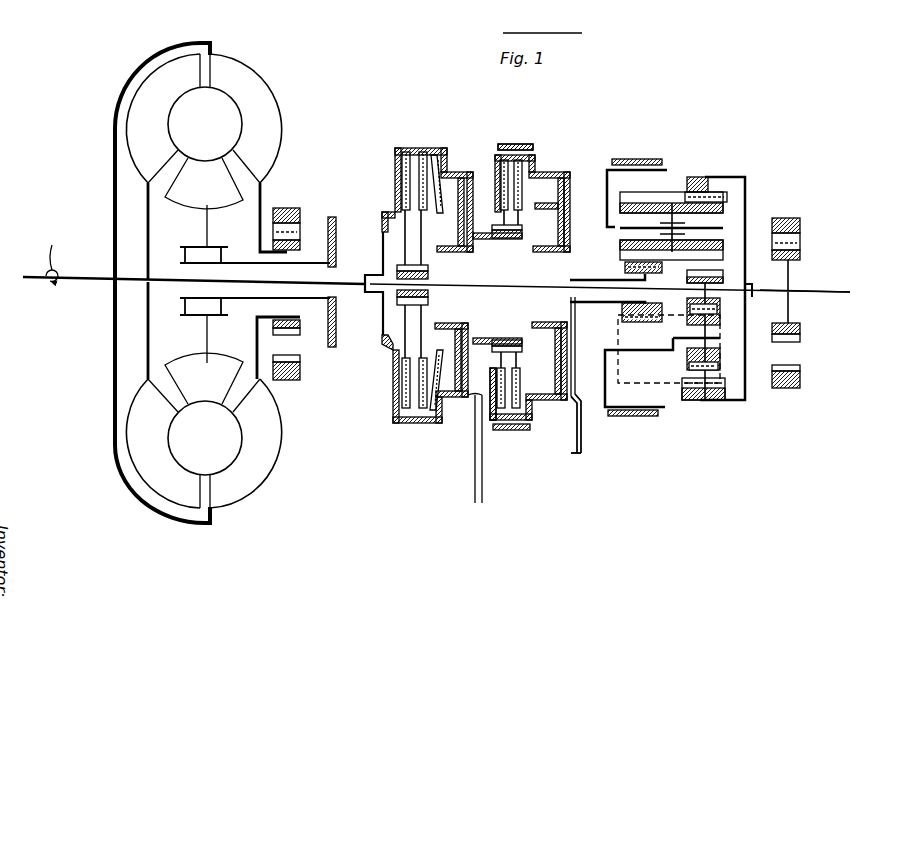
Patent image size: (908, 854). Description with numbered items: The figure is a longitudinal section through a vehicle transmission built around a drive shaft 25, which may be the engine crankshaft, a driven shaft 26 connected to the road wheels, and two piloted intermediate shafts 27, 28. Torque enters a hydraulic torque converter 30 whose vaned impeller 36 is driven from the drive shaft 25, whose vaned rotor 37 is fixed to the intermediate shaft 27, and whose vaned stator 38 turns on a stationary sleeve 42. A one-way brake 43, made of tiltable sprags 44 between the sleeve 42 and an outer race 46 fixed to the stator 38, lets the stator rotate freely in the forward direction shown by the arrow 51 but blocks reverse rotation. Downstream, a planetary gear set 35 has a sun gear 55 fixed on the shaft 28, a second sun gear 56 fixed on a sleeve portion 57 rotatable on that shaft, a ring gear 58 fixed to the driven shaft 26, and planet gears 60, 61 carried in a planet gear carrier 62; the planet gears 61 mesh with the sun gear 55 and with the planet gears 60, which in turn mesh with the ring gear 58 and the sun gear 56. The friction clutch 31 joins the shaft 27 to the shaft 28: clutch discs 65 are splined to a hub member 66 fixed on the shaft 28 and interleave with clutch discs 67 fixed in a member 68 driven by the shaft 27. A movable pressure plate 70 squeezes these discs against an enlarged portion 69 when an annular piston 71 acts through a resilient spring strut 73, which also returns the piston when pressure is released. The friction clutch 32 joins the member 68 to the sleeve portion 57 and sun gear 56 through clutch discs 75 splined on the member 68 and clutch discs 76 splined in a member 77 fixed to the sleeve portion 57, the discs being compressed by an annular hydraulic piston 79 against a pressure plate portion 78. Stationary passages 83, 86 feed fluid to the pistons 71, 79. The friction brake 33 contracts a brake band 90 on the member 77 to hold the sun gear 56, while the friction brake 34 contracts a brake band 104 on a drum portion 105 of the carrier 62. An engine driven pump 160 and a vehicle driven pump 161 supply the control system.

The drive shaft 25 is at (82, 277).
The driven shaft 26 is at (838, 292).
The intermediate shaft 27 is at (350, 283).
The intermediate shaft 28 is at (515, 285).
The hydraulic torque converter 30 is at (222, 283).
The friction clutch 31 is at (414, 188).
The friction clutch 32 is at (485, 157).
The friction brake 33 is at (521, 145).
The friction brake 34 is at (637, 158).
The planetary gear set 35 is at (720, 170).
The impeller element 36 is at (270, 129).
The rotor 37 is at (160, 122).
The stator 38 is at (217, 184).
The stationary sleeve 42 is at (317, 262).
The one-way brake 43 is at (178, 312).
The tiltable sprags 44 is at (190, 250).
The outer race 46 is at (232, 312).
The arrow 51 is at (50, 254).
The sun gear 55 is at (724, 278).
The second sun gear 56 is at (625, 270).
The sleeve portion 57 is at (598, 302).
The ring gear 58 is at (727, 198).
The planet gears 60 is at (722, 213).
The planet gears 61 is at (689, 363).
The planet gear carrier 62 is at (610, 227).
The clutch discs 65 is at (402, 391).
The hub member 66 is at (430, 298).
The clutch discs 67 is at (392, 366).
The member 68 is at (411, 378).
The enlarged portion 69 is at (395, 180).
The movable pressure plate 70 is at (437, 214).
The annular piston 71 is at (458, 252).
The spring strut 73 is at (447, 345).
The clutch discs 75 is at (490, 339).
The clutch discs 76 is at (520, 360).
The member 77 is at (528, 385).
The pressure plate portion 78 is at (489, 403).
The annular hydraulic piston 79 is at (584, 378).
The passage 83 is at (483, 488).
The passage 86 is at (583, 452).
The brake band 90 is at (535, 150).
The brake band 104 is at (655, 439).
The drum portion 105 is at (665, 407).
The engine driven pump 160 is at (290, 205).
The vehicle driven pump 161 is at (805, 219).